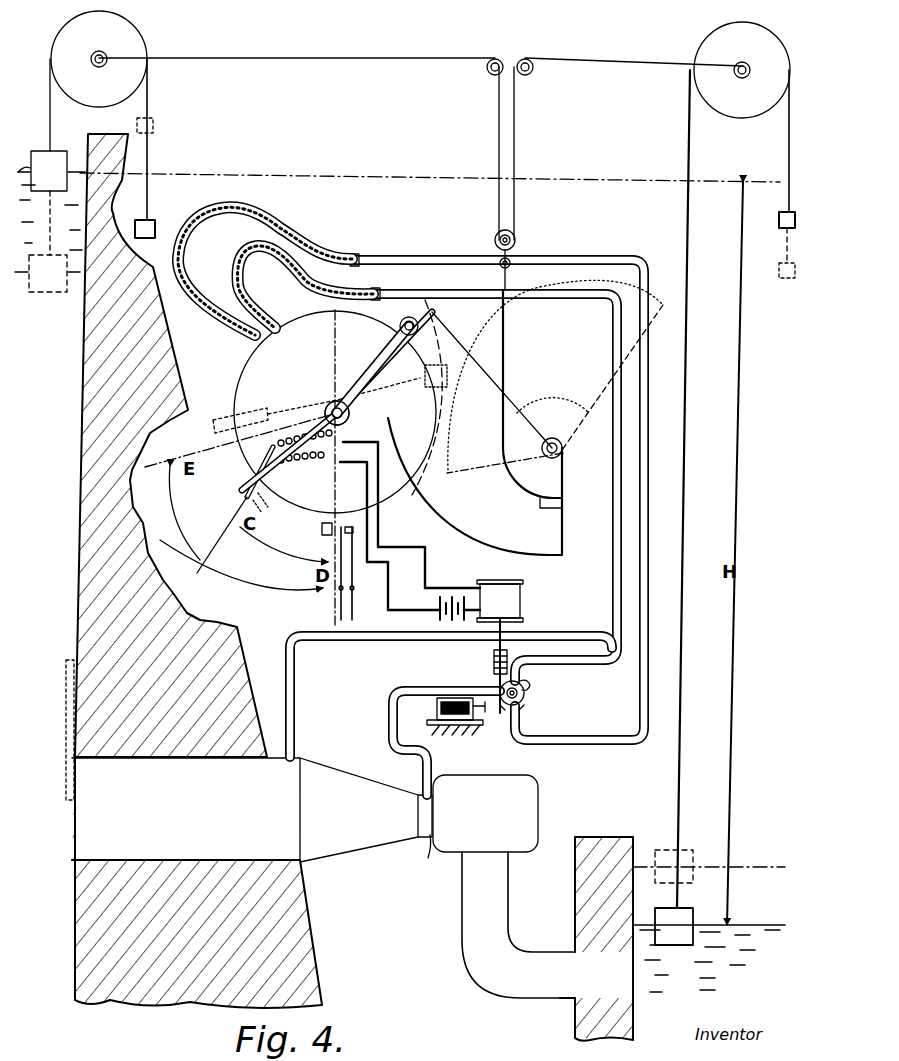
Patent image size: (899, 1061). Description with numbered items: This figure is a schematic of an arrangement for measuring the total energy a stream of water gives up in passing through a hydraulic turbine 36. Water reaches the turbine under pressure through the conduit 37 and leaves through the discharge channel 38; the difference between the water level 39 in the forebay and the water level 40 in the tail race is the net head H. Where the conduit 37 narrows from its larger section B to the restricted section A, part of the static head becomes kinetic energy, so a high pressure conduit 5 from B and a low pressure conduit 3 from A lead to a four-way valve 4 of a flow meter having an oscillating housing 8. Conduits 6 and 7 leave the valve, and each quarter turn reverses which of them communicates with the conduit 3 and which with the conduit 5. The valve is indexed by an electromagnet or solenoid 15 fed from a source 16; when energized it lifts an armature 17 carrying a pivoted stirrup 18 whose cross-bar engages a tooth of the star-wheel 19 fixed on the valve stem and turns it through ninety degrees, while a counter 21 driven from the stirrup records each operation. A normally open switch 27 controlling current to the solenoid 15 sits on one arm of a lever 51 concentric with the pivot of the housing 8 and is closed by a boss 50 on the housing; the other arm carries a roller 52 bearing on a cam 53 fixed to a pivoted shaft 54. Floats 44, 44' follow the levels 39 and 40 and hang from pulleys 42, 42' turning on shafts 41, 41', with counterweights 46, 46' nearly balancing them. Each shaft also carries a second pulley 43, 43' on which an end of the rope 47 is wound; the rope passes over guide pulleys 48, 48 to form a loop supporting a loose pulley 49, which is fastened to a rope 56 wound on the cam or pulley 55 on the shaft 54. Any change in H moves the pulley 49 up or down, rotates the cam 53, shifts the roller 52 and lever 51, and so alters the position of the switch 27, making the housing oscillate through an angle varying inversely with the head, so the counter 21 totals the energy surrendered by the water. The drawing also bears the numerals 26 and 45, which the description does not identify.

The low pressure conduit 3 is at (398, 690).
The four-way valve 4 is at (518, 702).
The high pressure conduit 5 is at (296, 668).
The conduit 6 is at (440, 258).
The conduit 7 is at (492, 294).
The housing 8 is at (257, 361).
The electromagnet 15 is at (520, 602).
The source 16 is at (455, 597).
The armature 17 is at (523, 628).
The stirrup 18 is at (495, 668).
The star-wheel 19 is at (524, 688).
The counter 21 is at (455, 722).
The contact wiring 26 is at (360, 548).
The normally open switch 27 is at (250, 495).
The hydraulic turbine 36 is at (485, 813).
The conduit 37 is at (382, 845).
The channel 38 is at (525, 992).
The water level 39 is at (30, 170).
The water level 40 is at (750, 925).
The shaft 41 is at (121, 81).
The shaft 41' is at (750, 166).
The pulley 42 is at (99, 59).
The pulley 42' is at (742, 70).
The second pulley 43 is at (102, 72).
The second pulley 43' is at (756, 80).
The float 44 is at (52, 223).
The float 44' is at (709, 897).
The rope 45 is at (150, 105).
The counterweight 46 is at (162, 217).
The counterweight 46' is at (775, 245).
The rope 47 is at (368, 60).
The guide pulley 48 is at (490, 72).
The loose pulley 49 is at (515, 243).
The boss 50 is at (322, 530).
The lever 51 is at (365, 360).
The roller 52 is at (400, 326).
The cam 53 is at (450, 520).
The pivoted shaft 54 is at (562, 449).
The cam or pulley 55 is at (563, 510).
The rope 56 is at (505, 345).